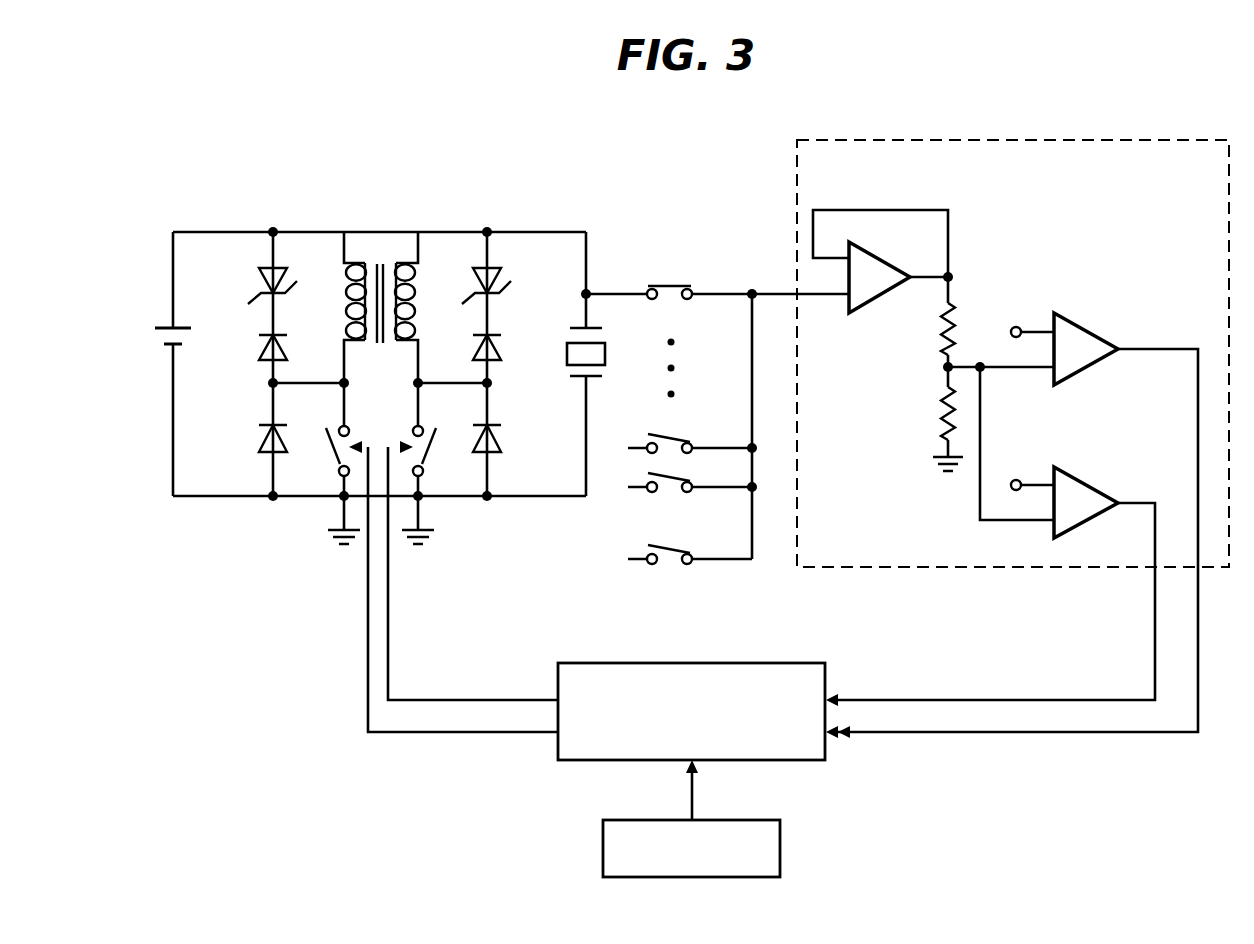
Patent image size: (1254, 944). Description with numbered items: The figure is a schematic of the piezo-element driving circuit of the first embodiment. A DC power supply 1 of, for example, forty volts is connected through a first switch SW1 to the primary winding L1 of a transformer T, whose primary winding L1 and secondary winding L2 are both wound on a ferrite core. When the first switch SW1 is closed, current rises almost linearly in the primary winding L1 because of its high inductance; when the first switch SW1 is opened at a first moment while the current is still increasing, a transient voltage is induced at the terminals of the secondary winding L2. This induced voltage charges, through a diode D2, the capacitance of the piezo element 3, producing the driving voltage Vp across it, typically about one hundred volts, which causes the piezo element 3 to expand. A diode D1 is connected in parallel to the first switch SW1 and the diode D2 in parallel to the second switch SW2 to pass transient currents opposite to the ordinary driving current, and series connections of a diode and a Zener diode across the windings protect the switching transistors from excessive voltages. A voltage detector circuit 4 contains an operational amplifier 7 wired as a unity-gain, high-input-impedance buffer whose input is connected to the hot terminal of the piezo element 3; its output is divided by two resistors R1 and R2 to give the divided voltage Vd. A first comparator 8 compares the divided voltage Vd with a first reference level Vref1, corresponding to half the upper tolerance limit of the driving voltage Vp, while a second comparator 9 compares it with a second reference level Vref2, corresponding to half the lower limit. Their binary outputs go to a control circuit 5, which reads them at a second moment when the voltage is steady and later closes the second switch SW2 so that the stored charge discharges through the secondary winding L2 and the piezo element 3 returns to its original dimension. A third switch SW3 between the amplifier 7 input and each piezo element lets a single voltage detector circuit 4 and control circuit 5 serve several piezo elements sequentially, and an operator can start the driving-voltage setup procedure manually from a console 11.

The DC power supply 1 is at (167, 327).
The piezo element 3 is at (581, 326).
The voltage detector circuit 4 is at (950, 137).
The control circuit 5 is at (768, 662).
The operational amplifier 7 is at (875, 252).
The first comparator 8 is at (1080, 327).
The second comparator 9 is at (1080, 481).
The console 11 is at (768, 818).
The transformer T is at (365, 262).
The primary winding L1 is at (348, 310).
The secondary winding L2 is at (410, 310).
The diode D1 is at (258, 436).
The diode D2 is at (502, 437).
The first switch SW1 is at (332, 445).
The second switch SW2 is at (430, 445).
The third switch SW3 is at (668, 570).
The resistor R1 is at (928, 329).
The resistor R2 is at (928, 413).
The driving voltage Vp is at (543, 232).
The divided voltage Vd is at (935, 367).
The first reference level Vref1 is at (1016, 327).
The second reference level Vref2 is at (1016, 480).